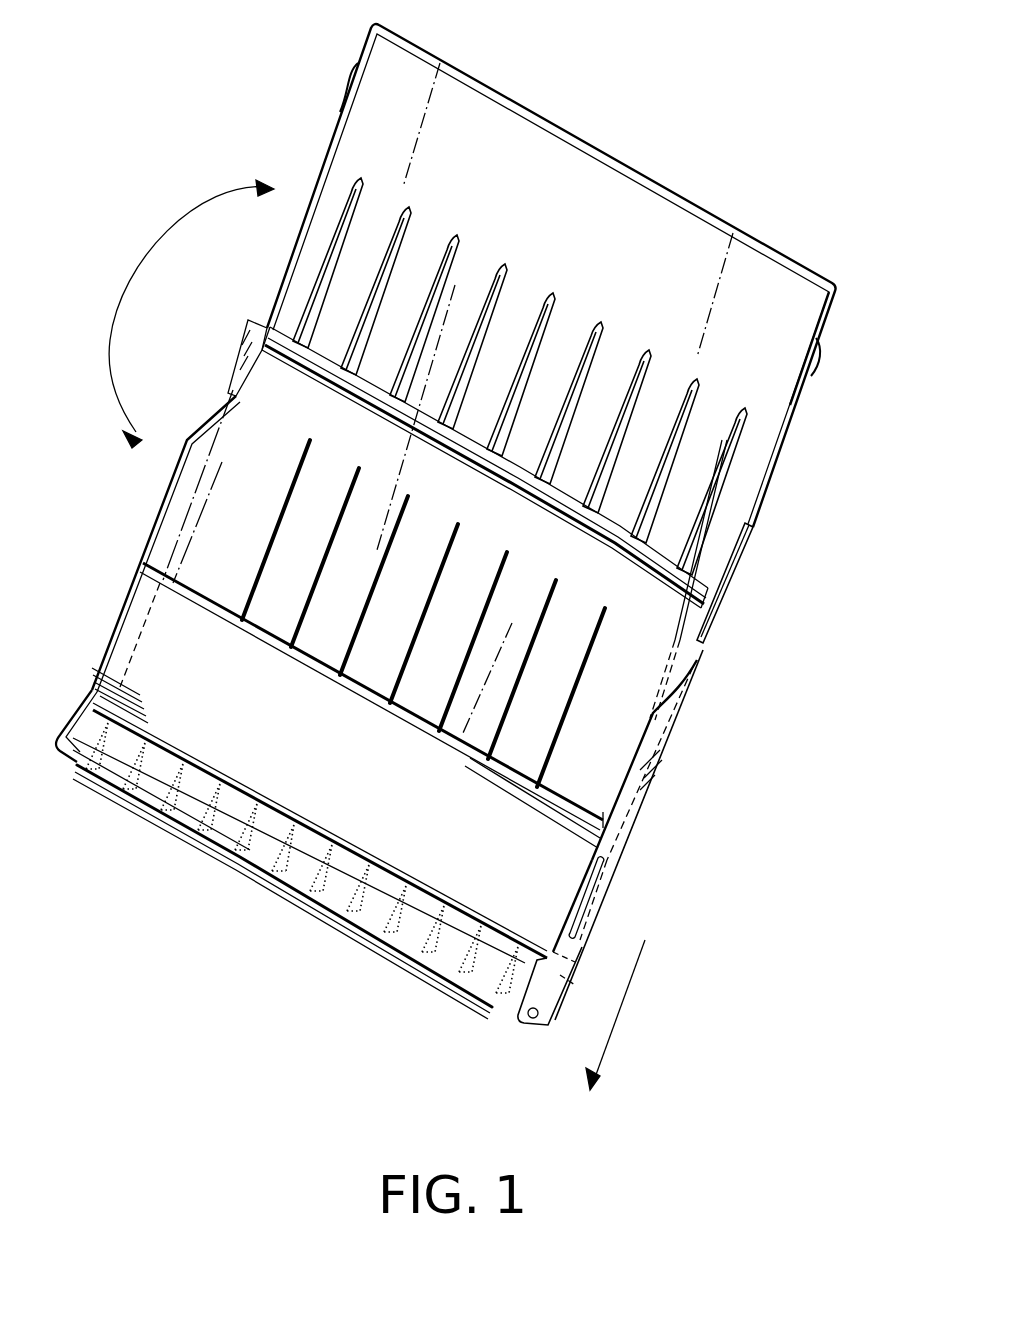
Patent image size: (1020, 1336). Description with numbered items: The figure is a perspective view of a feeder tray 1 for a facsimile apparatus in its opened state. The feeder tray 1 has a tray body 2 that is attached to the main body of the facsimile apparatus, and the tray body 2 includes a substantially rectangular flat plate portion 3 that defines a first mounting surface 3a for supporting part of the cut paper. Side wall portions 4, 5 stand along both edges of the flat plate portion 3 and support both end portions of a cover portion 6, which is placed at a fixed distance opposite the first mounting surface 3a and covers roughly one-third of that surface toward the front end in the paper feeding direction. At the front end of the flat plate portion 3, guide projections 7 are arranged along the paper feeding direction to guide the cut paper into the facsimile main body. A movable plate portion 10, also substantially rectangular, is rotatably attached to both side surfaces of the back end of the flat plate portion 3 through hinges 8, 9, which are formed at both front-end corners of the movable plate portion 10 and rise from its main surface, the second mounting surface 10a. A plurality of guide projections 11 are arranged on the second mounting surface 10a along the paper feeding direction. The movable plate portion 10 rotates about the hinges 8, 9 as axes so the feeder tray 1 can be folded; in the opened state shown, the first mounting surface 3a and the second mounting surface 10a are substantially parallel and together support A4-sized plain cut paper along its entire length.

The feeder tray 1 is at (150, 160).
The tray body 2 is at (154, 495).
The flat plate portion 3 is at (230, 395).
The first mounting surface 3a is at (653, 653).
The side wall portion 4 is at (140, 545).
The side wall portion 5 is at (612, 852).
The cover portion 6 is at (563, 800).
The guide projections 7 is at (170, 805).
The hinge 8 is at (257, 317).
The hinge 9 is at (720, 600).
The movable plate portion 10 is at (770, 353).
The second mounting surface 10a is at (373, 99).
The guide projections 11 is at (402, 227).